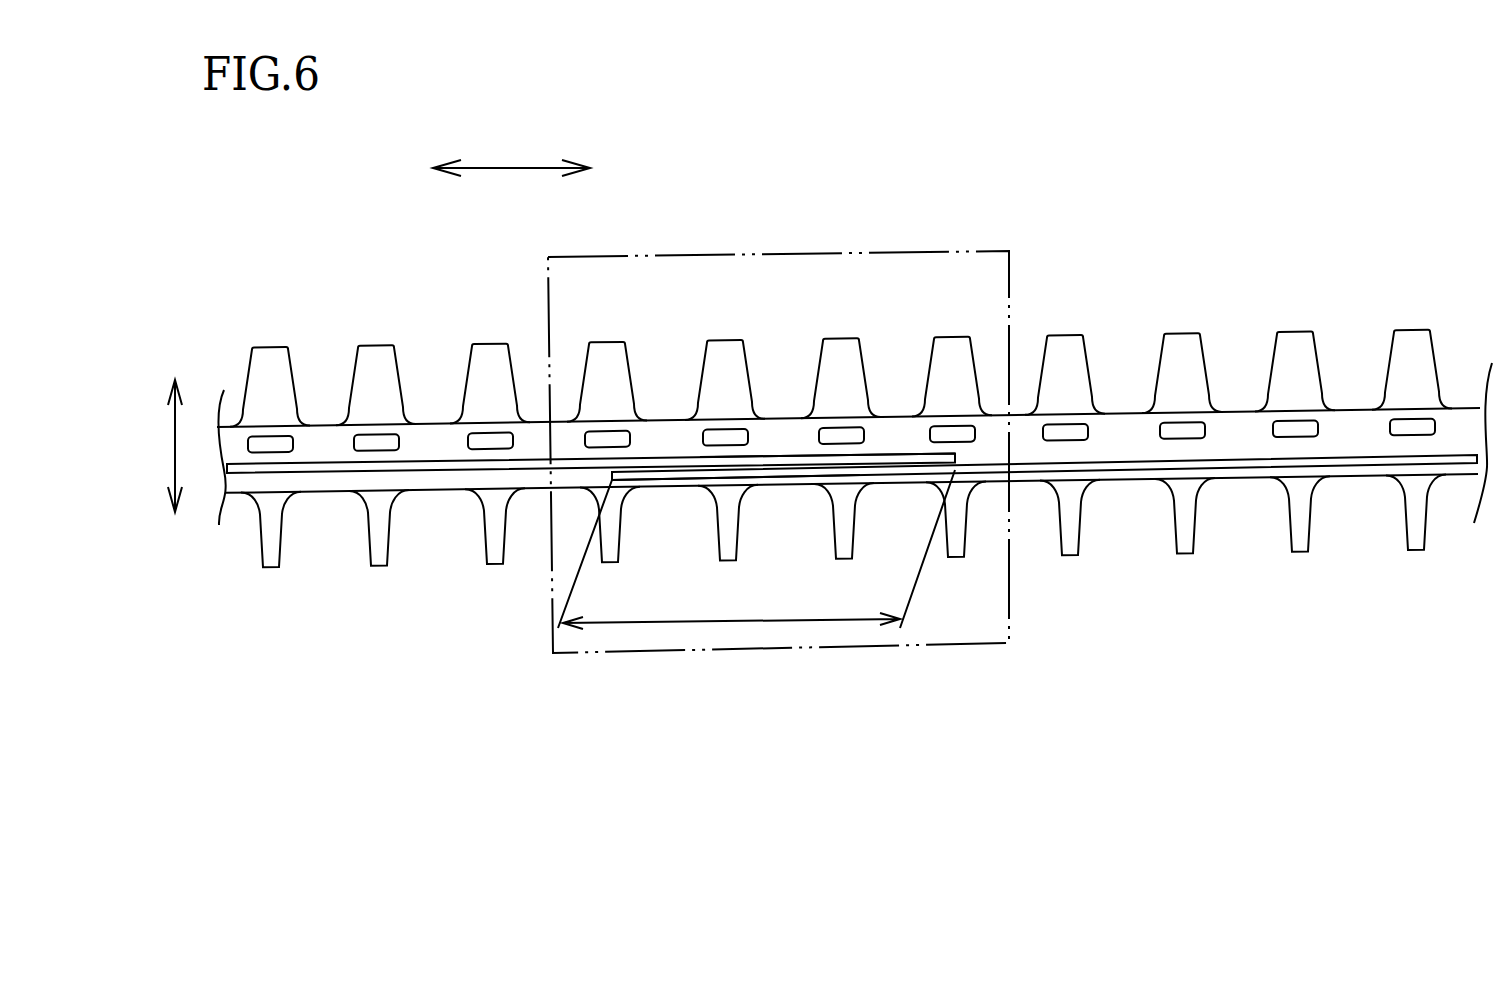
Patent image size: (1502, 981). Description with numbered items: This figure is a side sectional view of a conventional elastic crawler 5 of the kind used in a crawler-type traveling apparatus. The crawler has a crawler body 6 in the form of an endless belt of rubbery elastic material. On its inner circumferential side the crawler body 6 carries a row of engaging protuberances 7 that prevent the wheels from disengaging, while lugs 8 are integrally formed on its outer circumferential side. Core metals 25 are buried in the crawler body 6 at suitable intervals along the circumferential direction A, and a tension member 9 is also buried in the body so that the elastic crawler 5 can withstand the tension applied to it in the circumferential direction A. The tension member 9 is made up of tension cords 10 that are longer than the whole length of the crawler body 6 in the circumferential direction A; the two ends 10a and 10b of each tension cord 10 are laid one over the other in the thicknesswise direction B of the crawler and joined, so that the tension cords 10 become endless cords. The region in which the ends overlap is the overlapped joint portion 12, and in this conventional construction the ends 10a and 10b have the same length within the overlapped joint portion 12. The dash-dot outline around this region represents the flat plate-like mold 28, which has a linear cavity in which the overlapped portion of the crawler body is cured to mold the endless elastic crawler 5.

The elastic crawler 5 is at (1041, 307).
The crawler body 6 is at (435, 422).
The engaging protuberances 7 is at (600, 343).
The lugs 8 is at (490, 567).
The tension member 9 is at (329, 432).
The tension cords 10 is at (1120, 460).
The end of tension cord 10a is at (788, 456).
The end of tension cord 10b is at (781, 476).
The overlapped joint portion 12 is at (630, 622).
The core metals 25 is at (363, 453).
The flat plate-like mold 28 is at (705, 257).
The circumferential direction A is at (500, 168).
The thicknesswise direction B is at (177, 440).